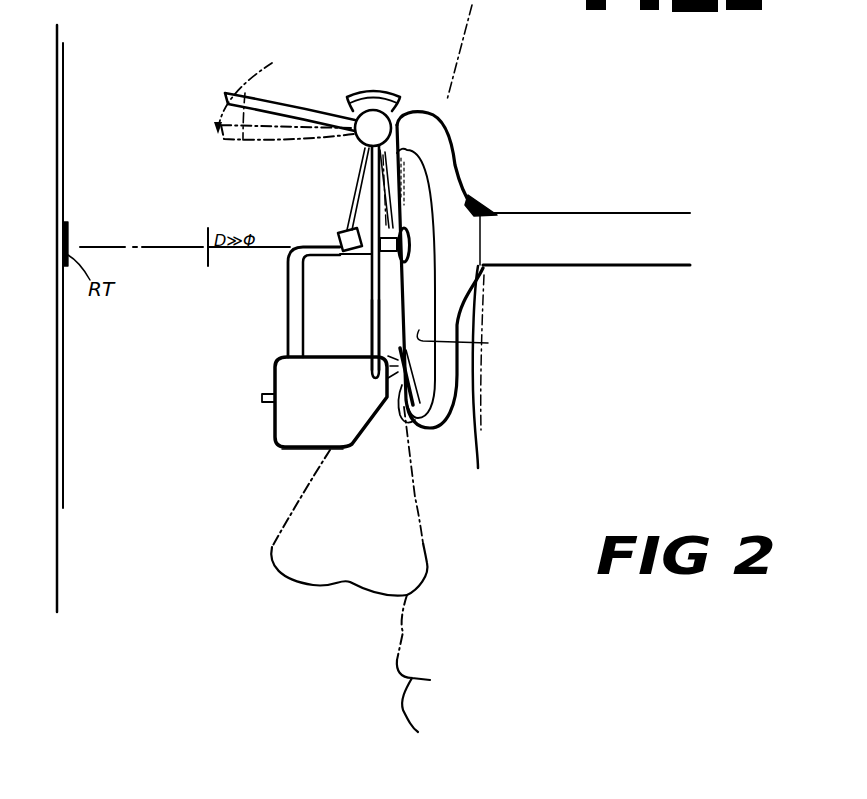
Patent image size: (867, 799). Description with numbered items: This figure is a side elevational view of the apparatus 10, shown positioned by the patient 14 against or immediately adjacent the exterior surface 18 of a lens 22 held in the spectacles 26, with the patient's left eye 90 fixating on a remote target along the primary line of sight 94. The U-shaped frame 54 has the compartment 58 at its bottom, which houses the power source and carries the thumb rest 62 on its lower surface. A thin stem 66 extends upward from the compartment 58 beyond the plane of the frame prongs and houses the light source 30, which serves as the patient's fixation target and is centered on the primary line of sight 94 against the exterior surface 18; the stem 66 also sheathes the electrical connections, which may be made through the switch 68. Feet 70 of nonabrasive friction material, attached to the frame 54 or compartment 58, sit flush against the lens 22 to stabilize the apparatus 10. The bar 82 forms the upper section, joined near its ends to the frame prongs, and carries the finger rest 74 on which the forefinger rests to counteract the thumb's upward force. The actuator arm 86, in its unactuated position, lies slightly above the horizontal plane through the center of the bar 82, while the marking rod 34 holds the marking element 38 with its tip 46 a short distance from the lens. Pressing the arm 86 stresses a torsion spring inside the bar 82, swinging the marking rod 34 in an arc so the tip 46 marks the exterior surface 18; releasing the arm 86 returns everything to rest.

The apparatus 10 is at (327, 62).
The patient 14 is at (466, 510).
The exterior surface 18 is at (476, 314).
The lens 22 is at (410, 445).
The spectacles 26 is at (447, 132).
The light source 30 is at (383, 262).
The marking rod 34 is at (355, 190).
The marking element 38 is at (342, 231).
The tip 46 is at (380, 250).
The frame 54 is at (367, 313).
The compartment 58 is at (292, 448).
The thumb rest 62 is at (308, 450).
The stem 66 is at (288, 332).
The switch 68 is at (262, 400).
The feet 70 is at (410, 232).
The finger rest 74 is at (382, 87).
The bar 82 is at (363, 137).
The actuator arm 86 is at (283, 108).
The left eye 90 is at (487, 212).
The primary line of sight 94 is at (150, 246).